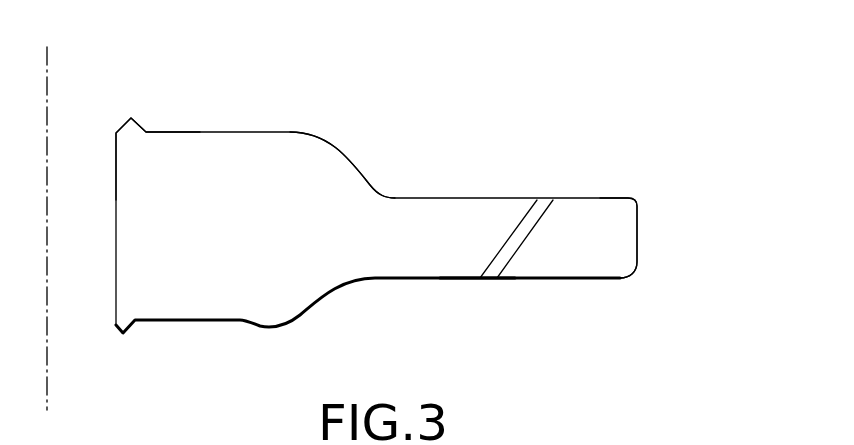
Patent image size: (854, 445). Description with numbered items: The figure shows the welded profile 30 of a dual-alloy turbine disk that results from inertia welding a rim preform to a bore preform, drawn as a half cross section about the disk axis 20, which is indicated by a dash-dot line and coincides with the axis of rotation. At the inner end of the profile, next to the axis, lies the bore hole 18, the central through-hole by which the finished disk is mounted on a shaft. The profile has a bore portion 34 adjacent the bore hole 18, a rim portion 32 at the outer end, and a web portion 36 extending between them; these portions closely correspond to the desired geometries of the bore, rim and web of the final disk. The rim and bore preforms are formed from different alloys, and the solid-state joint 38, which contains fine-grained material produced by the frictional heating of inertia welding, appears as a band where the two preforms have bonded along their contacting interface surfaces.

The bore hole 18 is at (113, 155).
The disk axis 20 is at (47, 83).
The welded profile 30 is at (463, 118).
The rim portion 32 is at (630, 200).
The bore portion 34 is at (318, 163).
The web portion 36 is at (512, 268).
The solid-state joint 38 is at (520, 233).